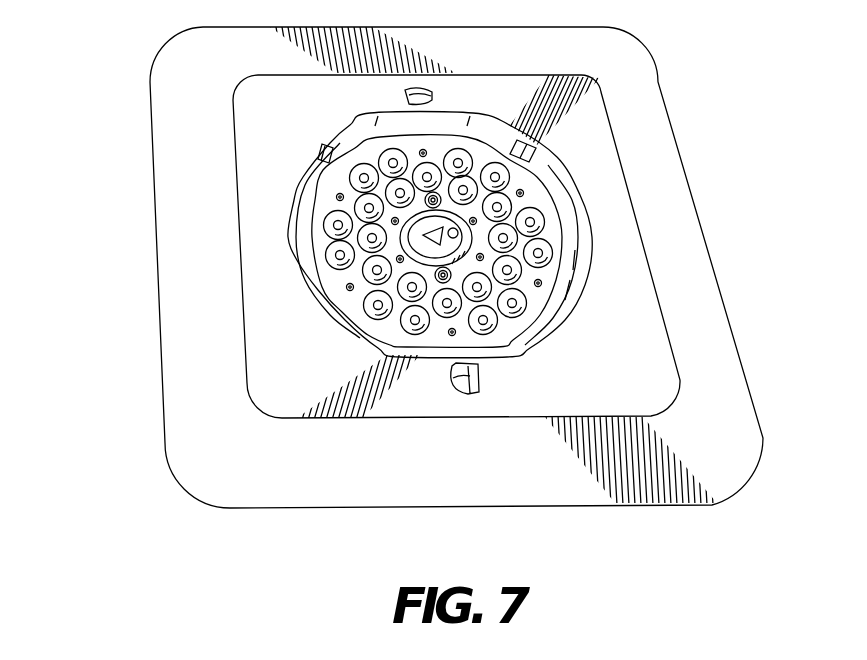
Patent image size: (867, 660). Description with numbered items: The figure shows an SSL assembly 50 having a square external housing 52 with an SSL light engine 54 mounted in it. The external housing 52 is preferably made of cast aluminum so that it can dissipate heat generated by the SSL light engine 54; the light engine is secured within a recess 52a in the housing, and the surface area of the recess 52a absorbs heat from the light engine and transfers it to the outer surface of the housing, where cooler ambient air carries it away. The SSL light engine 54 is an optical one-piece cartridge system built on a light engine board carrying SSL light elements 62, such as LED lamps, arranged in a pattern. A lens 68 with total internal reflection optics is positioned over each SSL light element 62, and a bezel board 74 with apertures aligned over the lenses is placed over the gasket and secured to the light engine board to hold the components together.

The SSL assembly 50 is at (128, 328).
The external housing 52 is at (511, 466).
The recess 52a is at (456, 247).
The SSL light engine 54 is at (412, 224).
The SSL light elements 62 is at (332, 222).
The lenses 68 is at (328, 257).
The bezel board 74 is at (340, 187).